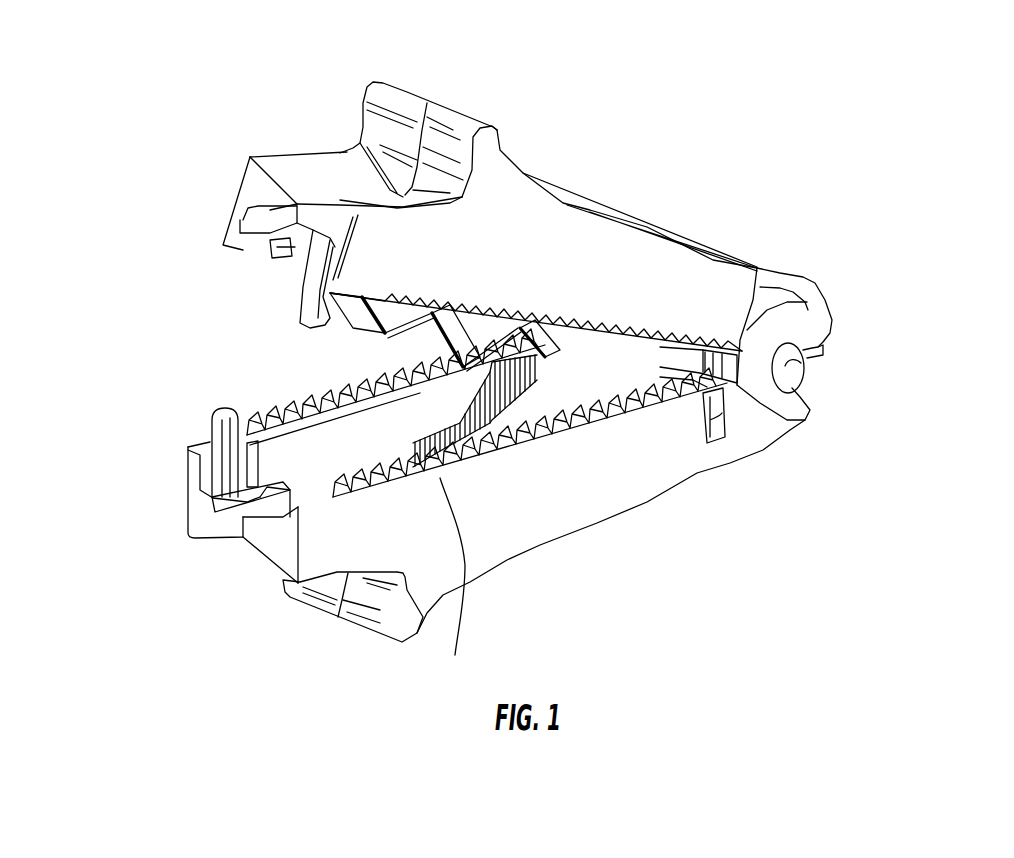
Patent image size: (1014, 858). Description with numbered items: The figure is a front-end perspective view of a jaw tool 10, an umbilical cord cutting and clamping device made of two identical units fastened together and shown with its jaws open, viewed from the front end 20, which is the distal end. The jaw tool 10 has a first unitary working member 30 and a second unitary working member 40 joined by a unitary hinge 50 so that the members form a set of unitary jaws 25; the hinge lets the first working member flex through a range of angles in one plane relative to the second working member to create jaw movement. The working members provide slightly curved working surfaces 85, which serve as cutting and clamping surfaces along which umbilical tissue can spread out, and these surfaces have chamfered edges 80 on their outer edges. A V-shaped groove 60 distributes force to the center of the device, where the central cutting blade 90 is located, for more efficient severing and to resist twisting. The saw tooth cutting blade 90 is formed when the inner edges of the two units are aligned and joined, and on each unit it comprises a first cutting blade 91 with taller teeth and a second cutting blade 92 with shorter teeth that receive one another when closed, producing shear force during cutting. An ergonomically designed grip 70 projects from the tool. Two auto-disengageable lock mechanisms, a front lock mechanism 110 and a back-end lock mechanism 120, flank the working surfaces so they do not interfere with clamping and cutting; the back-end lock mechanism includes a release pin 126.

The jaw tool 10 is at (685, 53).
The front end 20 is at (97, 407).
The set of unitary jaws 25 is at (177, 167).
The first unitary working member 30 is at (577, 197).
The second unitary working member 40 is at (538, 550).
The unitary hinge 50 is at (807, 348).
The V-shaped groove 60 is at (325, 190).
The grip 70 is at (425, 102).
The chamfered edges 80 is at (374, 630).
The working surfaces 85 is at (330, 477).
The central cutting blade 90 is at (373, 388).
The first cutting blade 91 is at (440, 338).
The second cutting blade 92 is at (650, 393).
The front lock mechanism 110 is at (222, 398).
The back-end lock mechanism 120 is at (725, 415).
The release pin 126 is at (723, 372).